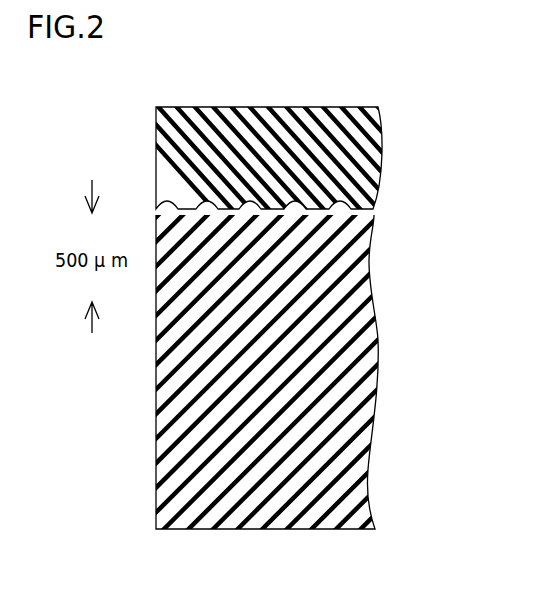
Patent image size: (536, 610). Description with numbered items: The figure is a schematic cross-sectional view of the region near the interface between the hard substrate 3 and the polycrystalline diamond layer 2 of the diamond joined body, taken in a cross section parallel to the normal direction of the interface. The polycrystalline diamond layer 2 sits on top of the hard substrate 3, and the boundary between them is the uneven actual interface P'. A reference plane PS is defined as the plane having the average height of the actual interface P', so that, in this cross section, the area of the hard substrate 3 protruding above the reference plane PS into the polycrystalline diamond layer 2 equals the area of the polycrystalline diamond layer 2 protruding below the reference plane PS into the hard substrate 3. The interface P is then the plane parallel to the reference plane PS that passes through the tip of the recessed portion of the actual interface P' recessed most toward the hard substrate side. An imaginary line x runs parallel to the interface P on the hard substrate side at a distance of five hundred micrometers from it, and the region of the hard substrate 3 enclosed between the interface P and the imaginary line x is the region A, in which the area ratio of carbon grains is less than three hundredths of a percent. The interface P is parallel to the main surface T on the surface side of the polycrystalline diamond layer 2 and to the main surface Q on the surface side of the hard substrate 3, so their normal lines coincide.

The polycrystalline diamond layer 2 is at (358, 164).
The hard substrate 3 is at (75, 215).
The region A is at (75, 302).
The imaginary line x is at (320, 302).
The interface P is at (179, 130).
The actual interface P' is at (247, 130).
The main surface T is at (280, 107).
The reference plane PS is at (345, 206).
The main surface Q is at (267, 529).